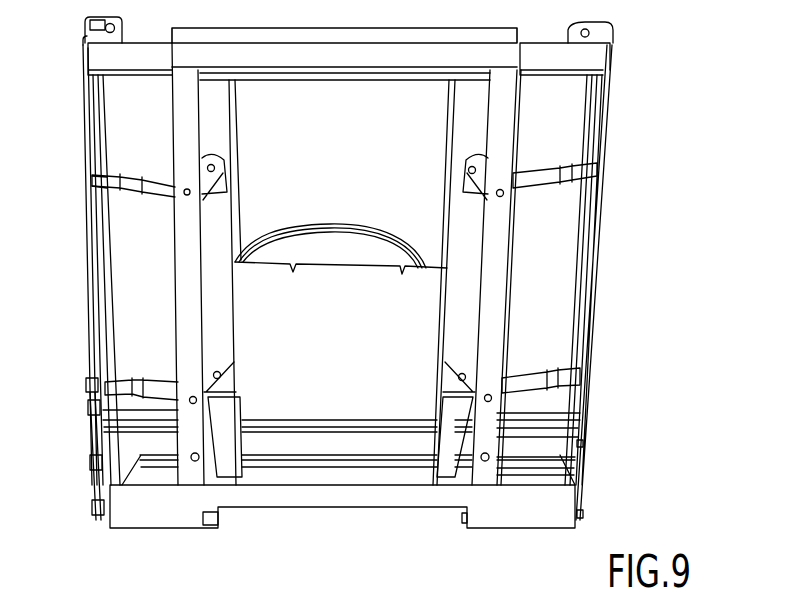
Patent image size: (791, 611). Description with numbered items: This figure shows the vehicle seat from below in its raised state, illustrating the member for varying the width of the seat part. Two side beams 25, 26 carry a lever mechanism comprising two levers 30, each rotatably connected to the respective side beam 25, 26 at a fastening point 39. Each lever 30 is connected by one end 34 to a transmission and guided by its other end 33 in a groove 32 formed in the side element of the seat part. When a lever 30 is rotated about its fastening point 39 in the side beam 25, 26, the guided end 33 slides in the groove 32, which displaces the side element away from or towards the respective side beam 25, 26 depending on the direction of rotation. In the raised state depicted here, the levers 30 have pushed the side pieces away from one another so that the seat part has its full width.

The side beam 25 is at (184, 272).
The side beam 26 is at (502, 275).
The lever 30 is at (143, 176).
The groove 32 is at (97, 117).
The other end 33 is at (96, 180).
The one end 34 is at (205, 160).
The fastening point 39 is at (182, 196).